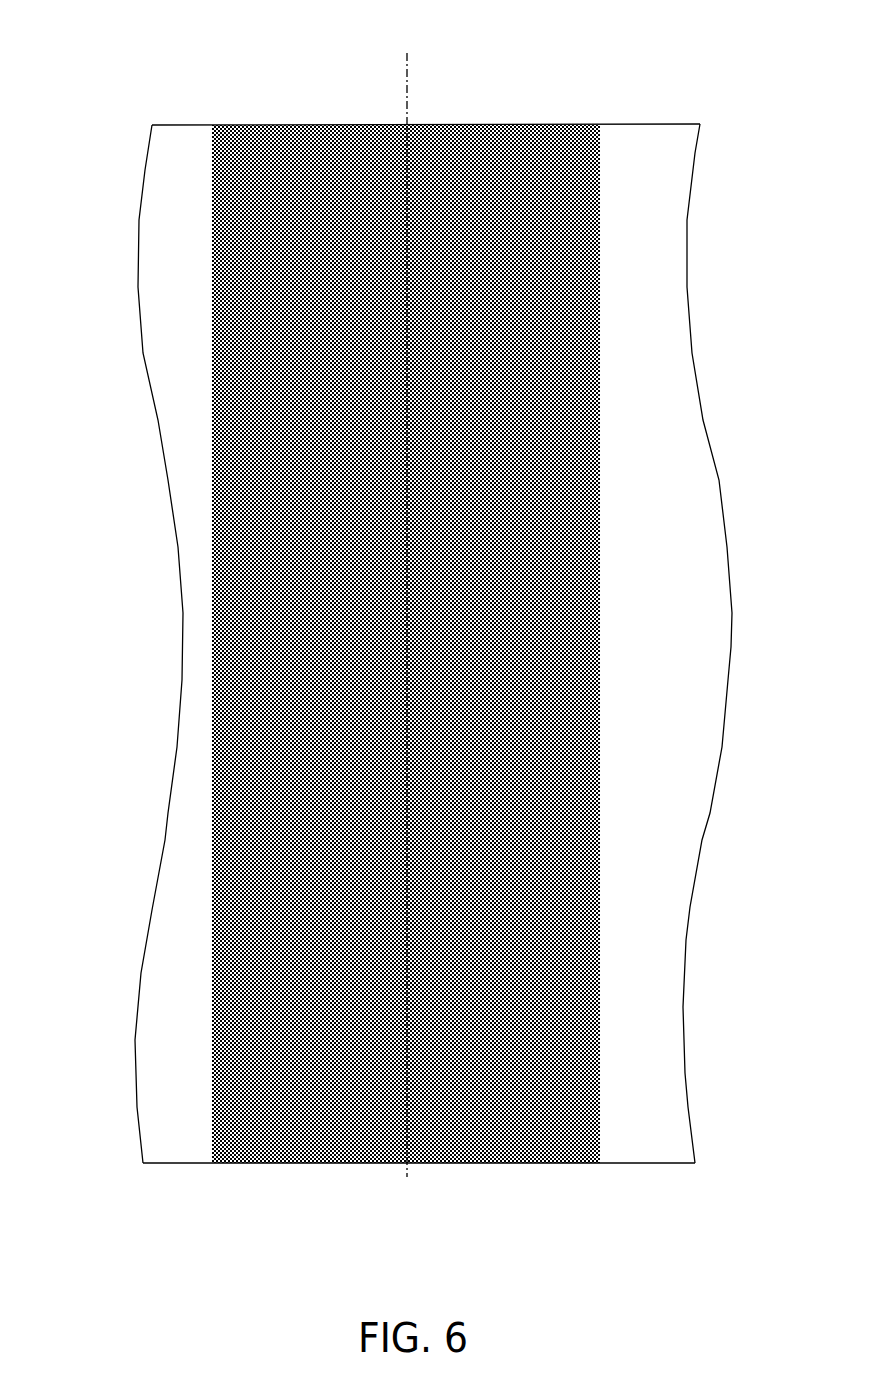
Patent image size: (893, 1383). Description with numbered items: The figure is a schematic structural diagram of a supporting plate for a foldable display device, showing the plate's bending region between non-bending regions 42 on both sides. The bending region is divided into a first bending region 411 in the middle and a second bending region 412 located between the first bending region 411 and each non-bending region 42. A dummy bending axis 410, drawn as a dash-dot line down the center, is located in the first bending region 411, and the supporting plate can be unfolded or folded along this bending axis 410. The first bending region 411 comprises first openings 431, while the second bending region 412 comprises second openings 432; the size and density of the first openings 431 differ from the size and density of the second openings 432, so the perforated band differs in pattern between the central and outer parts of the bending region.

The non-bending region 42 is at (178, 916).
The bending axis 410 is at (410, 92).
The first bending region 411 is at (433, 1165).
The second bending region 412 is at (263, 1165).
The first opening 431 is at (376, 138).
The second opening 432 is at (252, 138).